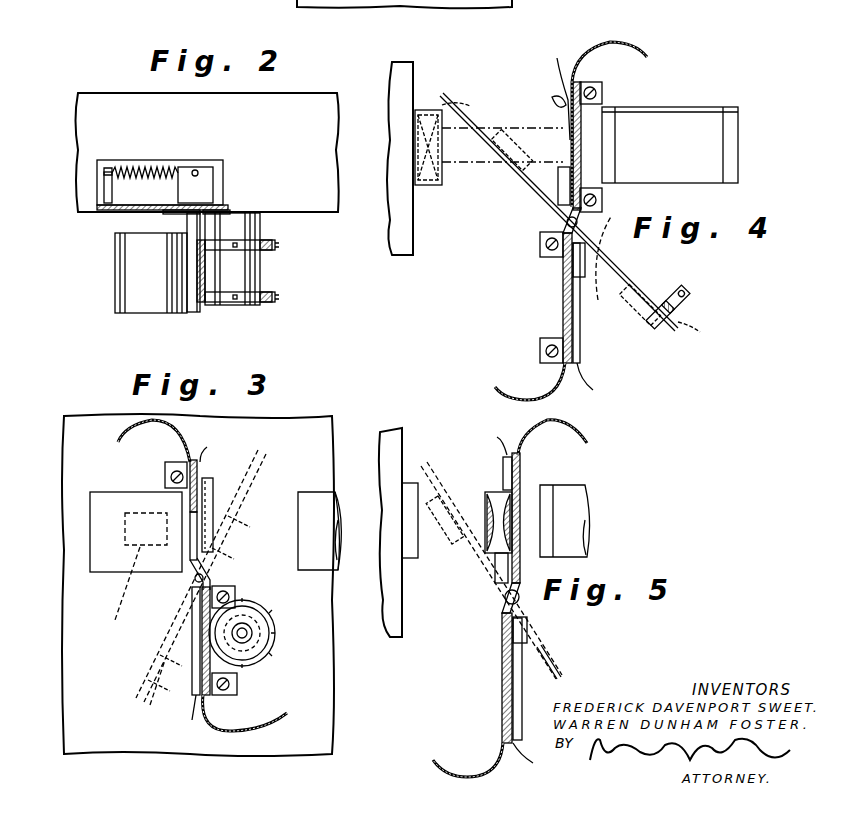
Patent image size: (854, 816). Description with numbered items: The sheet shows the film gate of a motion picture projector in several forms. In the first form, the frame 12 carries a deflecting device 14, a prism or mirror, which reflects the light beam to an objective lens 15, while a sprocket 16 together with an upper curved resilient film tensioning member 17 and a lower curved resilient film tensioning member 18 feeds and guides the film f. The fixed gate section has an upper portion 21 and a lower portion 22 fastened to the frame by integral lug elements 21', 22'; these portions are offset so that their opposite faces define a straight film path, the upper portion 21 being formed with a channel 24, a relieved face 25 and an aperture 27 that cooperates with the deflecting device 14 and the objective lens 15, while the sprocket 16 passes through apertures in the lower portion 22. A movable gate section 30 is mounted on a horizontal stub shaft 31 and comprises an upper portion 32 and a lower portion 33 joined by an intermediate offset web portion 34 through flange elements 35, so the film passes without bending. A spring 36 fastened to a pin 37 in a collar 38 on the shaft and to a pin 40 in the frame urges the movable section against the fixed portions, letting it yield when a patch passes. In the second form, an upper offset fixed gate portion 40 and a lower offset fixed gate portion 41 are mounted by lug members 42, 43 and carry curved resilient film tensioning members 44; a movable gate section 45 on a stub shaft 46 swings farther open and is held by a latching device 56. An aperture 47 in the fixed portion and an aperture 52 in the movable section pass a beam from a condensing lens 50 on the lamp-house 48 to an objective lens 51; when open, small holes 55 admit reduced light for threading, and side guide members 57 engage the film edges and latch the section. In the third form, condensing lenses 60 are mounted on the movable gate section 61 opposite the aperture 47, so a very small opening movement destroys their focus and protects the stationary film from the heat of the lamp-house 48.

In FIG. 3, the frame 12 is at (118, 617).
In FIG. 3, the deflecting device 14 is at (113, 572).
In FIG. 3, the objective lens 15 is at (320, 495).
In FIG. 2, the sprocket 16 is at (258, 304).
In FIG. 3, the sprocket 16 is at (276, 640).
In FIG. 3, the upper curved resilient film tensioning member 17 is at (118, 442).
In FIG. 3, the lower curved resilient film tensioning member 18 is at (288, 714).
In FIG. 3, the upper portion of fixed gate section 21 is at (189, 504).
In FIG. 2, the integral lug element 21' is at (161, 221).
In FIG. 3, the lower portion of fixed gate section 22 is at (236, 638).
In FIG. 2, the integral lug element 22' is at (254, 221).
In FIG. 2, the channel 24 is at (192, 313).
In FIG. 2, the relieved face 25 is at (178, 314).
In FIG. 3, the aperture 27 is at (195, 530).
In FIG. 2, the movable gate section 30 is at (212, 275).
In FIG. 3, the movable gate section 30 is at (165, 601).
In FIG. 3, the stub shaft 31 is at (210, 590).
In FIG. 2, the upper portion of movable gate section 32 is at (214, 188).
In FIG. 3, the upper portion of movable gate section 32 is at (208, 447).
In FIG. 3, the lower portion of movable gate section 33 is at (150, 706).
In FIG. 3, the intermediate offset web portion 34 is at (215, 581).
In FIG. 3, the flange elements 35 is at (208, 496).
In FIG. 2, the spring 36 is at (150, 165).
In FIG. 2, the pin 37 is at (197, 170).
In FIG. 2, the collar 38 is at (212, 167).
In FIG. 2, the upper offset fixed gate portion 40 is at (103, 190).
In FIG. 4, the upper offset fixed gate portion 40 is at (583, 170).
In FIG. 4, the lower offset fixed gate portion 41 is at (563, 300).
In FIG. 5, the lower offset fixed gate portion 41 is at (520, 571).
In FIG. 4, the lug member 42 is at (603, 90).
In FIG. 4, the lug member 43 is at (540, 344).
In FIG. 4, the curved resilient film tensioning members 44 is at (625, 45).
In FIG. 5, the curved resilient film tensioning members 44 is at (590, 440).
In FIG. 4, the movable gate section 45 is at (580, 302).
In FIG. 4, the stub shaft 46 is at (540, 240).
In FIG. 4, the aperture 47 is at (577, 137).
In FIG. 5, the aperture 47 is at (517, 500).
In FIG. 4, the lamp-house 48 is at (405, 237).
In FIG. 5, the lamp-house 48 is at (402, 612).
In FIG. 4, the condensing lens 50 is at (425, 110).
In FIG. 4, the objective lens 51 is at (740, 176).
In FIG. 5, the objective lens 51 is at (590, 558).
In FIG. 4, the aperture 52 is at (563, 143).
In FIG. 4, the small holes 55 is at (560, 100).
In FIG. 4, the latching device 56 is at (690, 305).
In FIG. 4, the side guide members 57 is at (512, 135).
In FIG. 5, the condensing lenses 60 is at (487, 510).
In FIG. 5, the movable gate section 61 is at (497, 437).
In FIG. 4, the film f is at (455, 110).